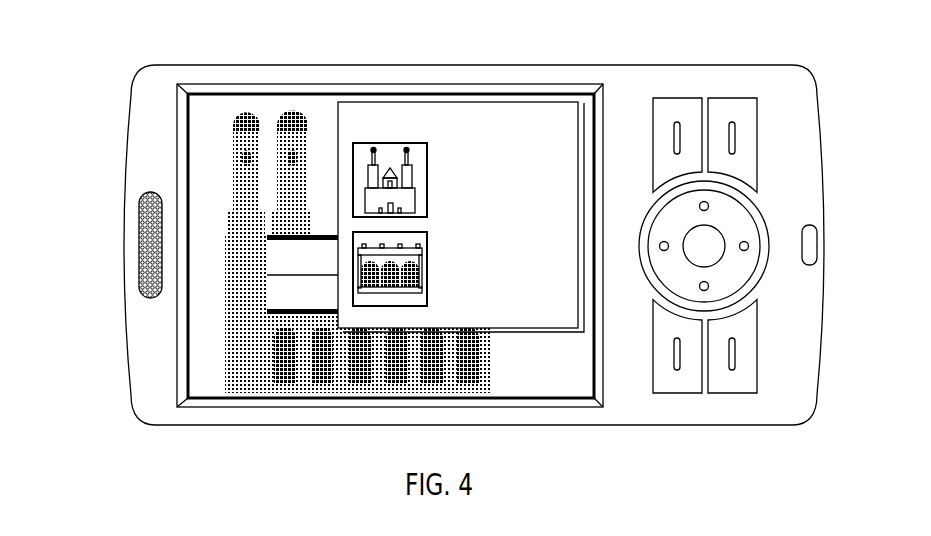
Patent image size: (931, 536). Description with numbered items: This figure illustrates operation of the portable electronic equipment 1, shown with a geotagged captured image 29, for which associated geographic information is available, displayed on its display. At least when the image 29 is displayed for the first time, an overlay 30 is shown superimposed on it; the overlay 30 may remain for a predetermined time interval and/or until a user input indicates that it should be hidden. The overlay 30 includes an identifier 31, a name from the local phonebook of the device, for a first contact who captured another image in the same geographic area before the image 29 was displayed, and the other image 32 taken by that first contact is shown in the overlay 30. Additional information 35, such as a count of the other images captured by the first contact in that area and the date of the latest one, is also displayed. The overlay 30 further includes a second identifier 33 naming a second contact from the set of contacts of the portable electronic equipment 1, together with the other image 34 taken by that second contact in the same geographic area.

The portable electronic equipment 1 is at (131, 108).
The captured image 29 is at (240, 110).
The overlay 30 is at (375, 107).
The identifier 31 is at (513, 163).
The other image 32 is at (428, 208).
The second identifier 33 is at (517, 275).
The other image 34 is at (428, 297).
The additional information 35 is at (543, 225).